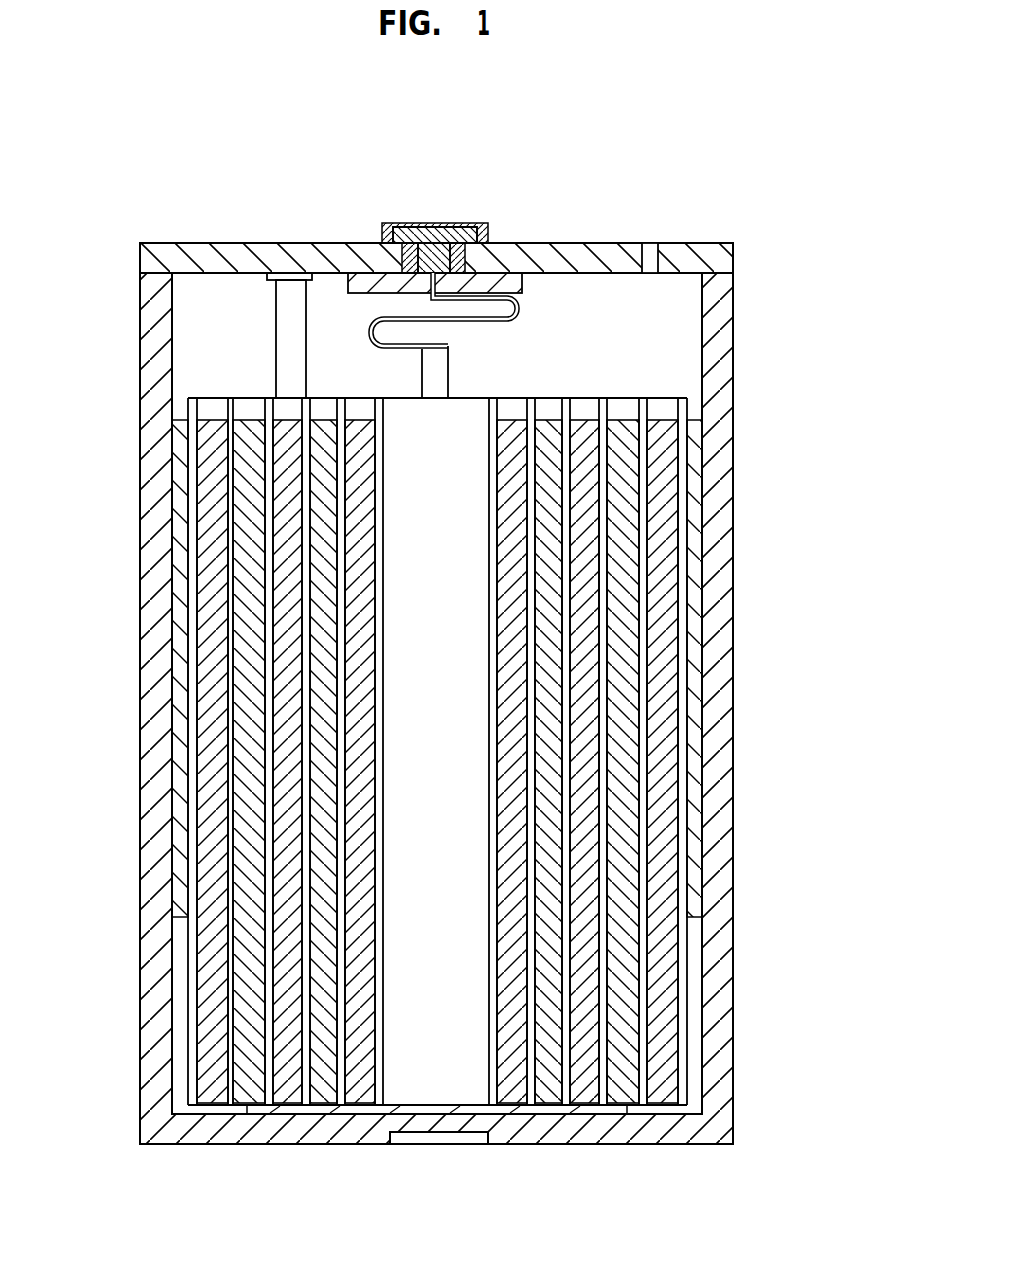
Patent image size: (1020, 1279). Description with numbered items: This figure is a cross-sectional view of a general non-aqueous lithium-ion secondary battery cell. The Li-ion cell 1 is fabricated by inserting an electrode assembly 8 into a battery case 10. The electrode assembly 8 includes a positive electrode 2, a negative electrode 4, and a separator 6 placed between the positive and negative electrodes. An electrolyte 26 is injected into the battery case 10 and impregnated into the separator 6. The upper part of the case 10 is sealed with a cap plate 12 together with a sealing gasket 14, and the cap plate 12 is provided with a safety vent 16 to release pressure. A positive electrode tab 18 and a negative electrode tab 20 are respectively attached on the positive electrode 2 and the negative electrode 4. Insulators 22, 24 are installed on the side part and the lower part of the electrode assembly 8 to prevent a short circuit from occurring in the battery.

The Li-ion cell 1 is at (812, 393).
The positive electrode 2 is at (645, 973).
The negative electrode 4 is at (248, 921).
The separator 6 is at (230, 1045).
The electrode assembly 8 is at (606, 382).
The battery case 10 is at (152, 370).
The cap plate 12 is at (562, 243).
The sealing gasket 14 is at (390, 224).
The safety vent 16 is at (648, 243).
The positive electrode tab 18 is at (290, 290).
The negative electrode tab 20 is at (433, 265).
The insulator 22 is at (182, 660).
The insulator 24 is at (322, 1115).
The electrolyte 26 is at (643, 1041).